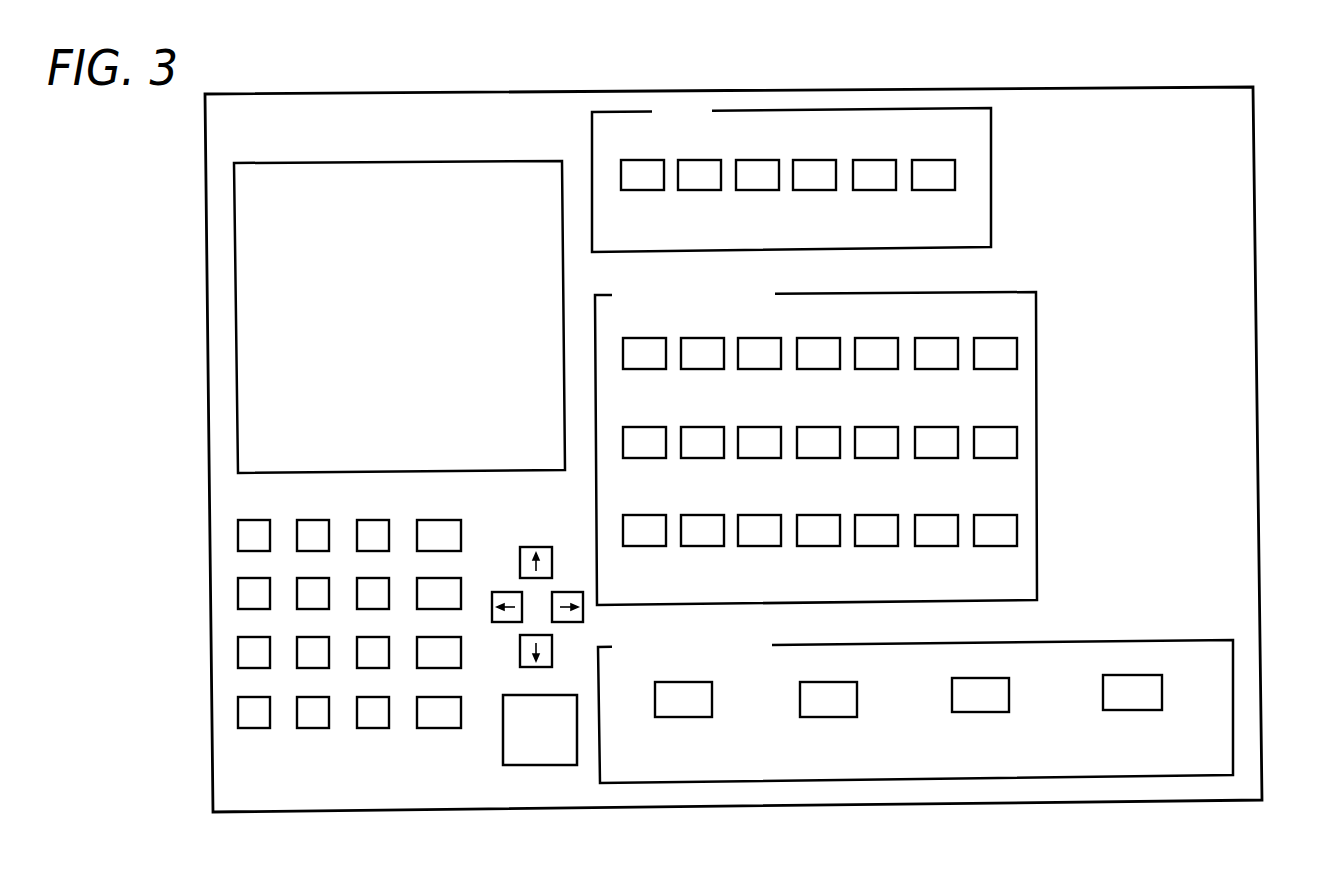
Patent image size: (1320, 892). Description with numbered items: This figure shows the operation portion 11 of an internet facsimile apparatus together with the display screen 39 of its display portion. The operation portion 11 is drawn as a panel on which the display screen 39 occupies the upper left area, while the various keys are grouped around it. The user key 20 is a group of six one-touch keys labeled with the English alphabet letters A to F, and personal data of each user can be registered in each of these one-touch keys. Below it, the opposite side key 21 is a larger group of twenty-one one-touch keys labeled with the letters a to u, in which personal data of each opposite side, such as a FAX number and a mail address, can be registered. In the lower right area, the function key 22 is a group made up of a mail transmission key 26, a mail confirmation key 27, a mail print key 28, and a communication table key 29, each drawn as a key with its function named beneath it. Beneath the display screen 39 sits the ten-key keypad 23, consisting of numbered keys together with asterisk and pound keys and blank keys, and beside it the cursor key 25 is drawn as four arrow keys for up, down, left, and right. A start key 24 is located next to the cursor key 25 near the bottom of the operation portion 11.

The operation portion 11 is at (1240, 122).
The user key 20 is at (944, 145).
The opposite side key 21 is at (1009, 416).
The function key 22 is at (915, 678).
The ten-key keypad 23 is at (290, 736).
The start key 24 is at (516, 750).
The cursor key 25 is at (500, 643).
The mail transmission key 26 is at (712, 698).
The mail confirmation key 27 is at (857, 696).
The mail print key 28 is at (1009, 692).
The communication table key 29 is at (1162, 690).
The display screen 39 is at (478, 338).